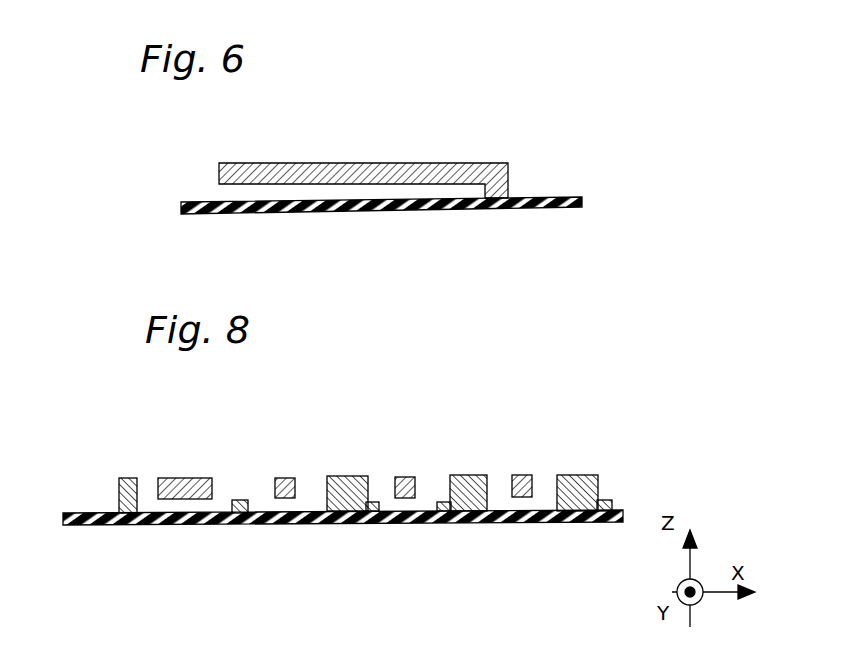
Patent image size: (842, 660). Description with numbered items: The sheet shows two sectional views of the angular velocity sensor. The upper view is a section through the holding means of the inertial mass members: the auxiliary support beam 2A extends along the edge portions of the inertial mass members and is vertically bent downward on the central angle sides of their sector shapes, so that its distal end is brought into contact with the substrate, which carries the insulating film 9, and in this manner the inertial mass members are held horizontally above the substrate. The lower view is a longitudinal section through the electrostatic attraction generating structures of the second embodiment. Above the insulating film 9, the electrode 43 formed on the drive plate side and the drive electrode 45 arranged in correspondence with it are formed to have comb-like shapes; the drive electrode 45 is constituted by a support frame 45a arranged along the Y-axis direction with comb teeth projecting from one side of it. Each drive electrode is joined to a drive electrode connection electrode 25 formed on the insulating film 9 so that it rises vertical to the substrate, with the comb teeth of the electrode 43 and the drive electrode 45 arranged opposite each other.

In FIG. 6, the insulating film 9 is at (198, 202).
In FIG. 8, the insulating film 9 is at (75, 513).
In FIG. 6, the auxiliary support beam 2A is at (345, 163).
In FIG. 8, the support frame 45a is at (128, 478).
In FIG. 8, the electrode 43 is at (188, 478).
In FIG. 8, the drive electrode 45 is at (338, 476).
In FIG. 8, the drive electrode connection electrode 25 is at (243, 500).